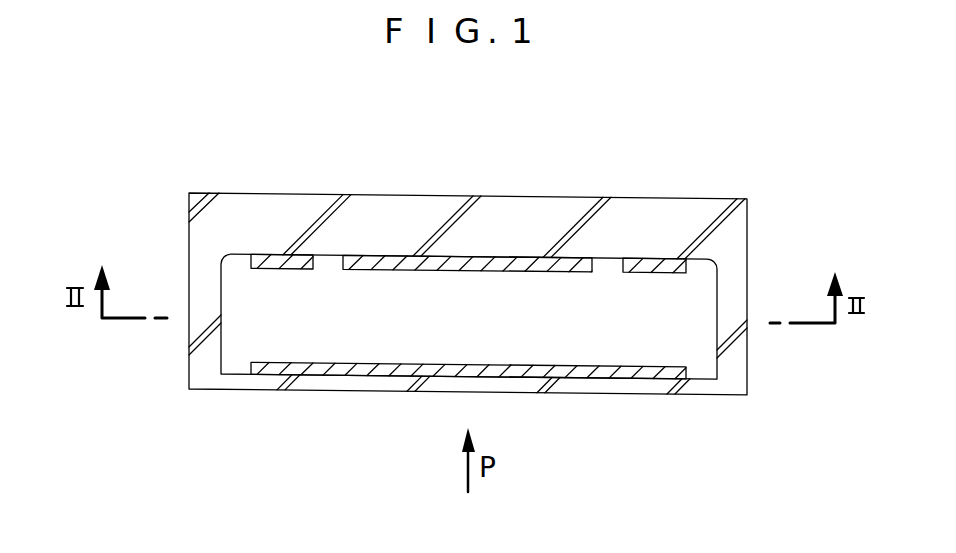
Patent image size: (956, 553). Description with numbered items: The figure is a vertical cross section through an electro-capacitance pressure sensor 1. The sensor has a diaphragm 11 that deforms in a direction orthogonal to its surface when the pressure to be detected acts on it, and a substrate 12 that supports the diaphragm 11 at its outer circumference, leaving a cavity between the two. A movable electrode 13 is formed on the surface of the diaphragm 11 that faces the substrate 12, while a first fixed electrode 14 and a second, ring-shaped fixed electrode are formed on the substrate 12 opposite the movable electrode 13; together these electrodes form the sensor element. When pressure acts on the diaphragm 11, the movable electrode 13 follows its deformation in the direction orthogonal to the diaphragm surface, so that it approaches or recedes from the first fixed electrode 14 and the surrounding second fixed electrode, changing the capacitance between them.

The electro-capacitance pressure sensor 1 is at (162, 158).
The diaphragm 11 is at (597, 388).
The substrate 12 is at (374, 207).
The movable electrode 13 is at (432, 366).
The first fixed electrode 14 is at (538, 266).